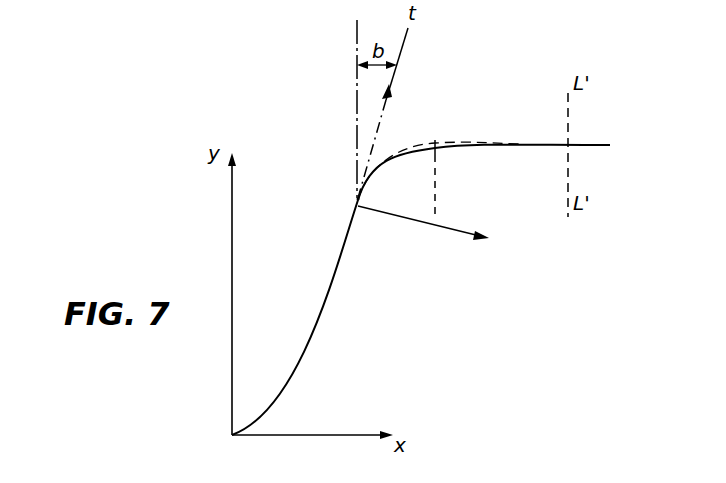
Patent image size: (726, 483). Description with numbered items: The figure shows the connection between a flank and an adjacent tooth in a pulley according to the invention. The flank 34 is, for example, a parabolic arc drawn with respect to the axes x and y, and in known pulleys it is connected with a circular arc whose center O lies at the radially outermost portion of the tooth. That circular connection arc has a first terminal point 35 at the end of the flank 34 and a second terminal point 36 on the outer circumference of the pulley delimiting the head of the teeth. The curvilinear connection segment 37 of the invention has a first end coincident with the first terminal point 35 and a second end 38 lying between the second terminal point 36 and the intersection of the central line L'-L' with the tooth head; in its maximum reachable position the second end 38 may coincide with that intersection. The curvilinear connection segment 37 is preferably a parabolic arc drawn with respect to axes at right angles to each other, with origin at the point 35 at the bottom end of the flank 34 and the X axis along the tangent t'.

The flank 34 is at (306, 356).
The first terminal point 35 is at (406, 214).
The second terminal point 36 is at (435, 171).
The curvilinear connection segment 37 is at (443, 152).
The second end 38 is at (439, 158).